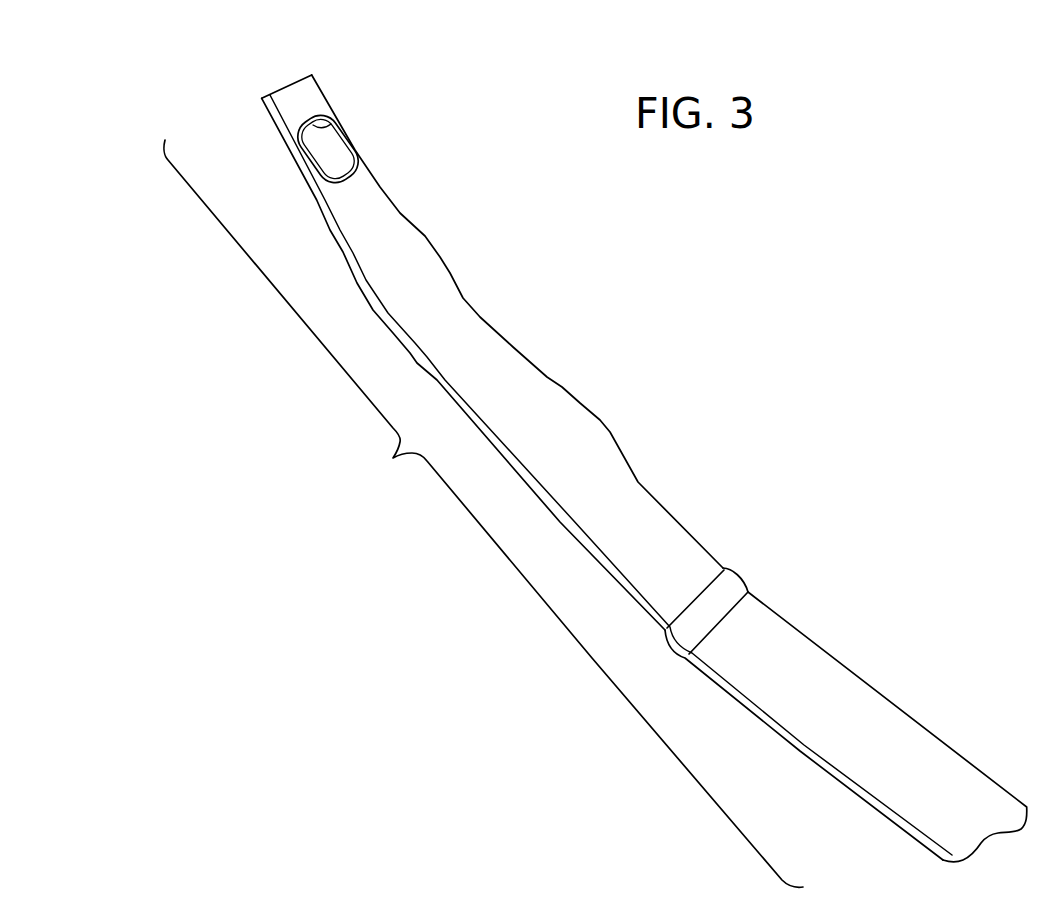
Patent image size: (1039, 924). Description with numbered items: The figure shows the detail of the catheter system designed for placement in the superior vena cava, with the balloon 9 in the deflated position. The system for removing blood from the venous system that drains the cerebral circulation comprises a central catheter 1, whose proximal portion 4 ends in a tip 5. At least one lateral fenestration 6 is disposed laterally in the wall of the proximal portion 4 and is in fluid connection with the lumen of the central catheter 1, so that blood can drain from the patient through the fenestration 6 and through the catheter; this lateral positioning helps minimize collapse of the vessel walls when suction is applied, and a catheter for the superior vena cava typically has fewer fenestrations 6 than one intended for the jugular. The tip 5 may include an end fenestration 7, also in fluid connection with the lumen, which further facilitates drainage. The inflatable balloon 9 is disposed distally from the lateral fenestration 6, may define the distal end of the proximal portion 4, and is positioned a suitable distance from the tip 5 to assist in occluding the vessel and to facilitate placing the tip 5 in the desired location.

The central catheter 1 is at (605, 425).
The proximal portion 4 is at (483, 513).
The tip 5 is at (313, 80).
The lateral fenestration 6 is at (327, 152).
The end fenestration 7 is at (283, 87).
The balloon 9 is at (888, 702).